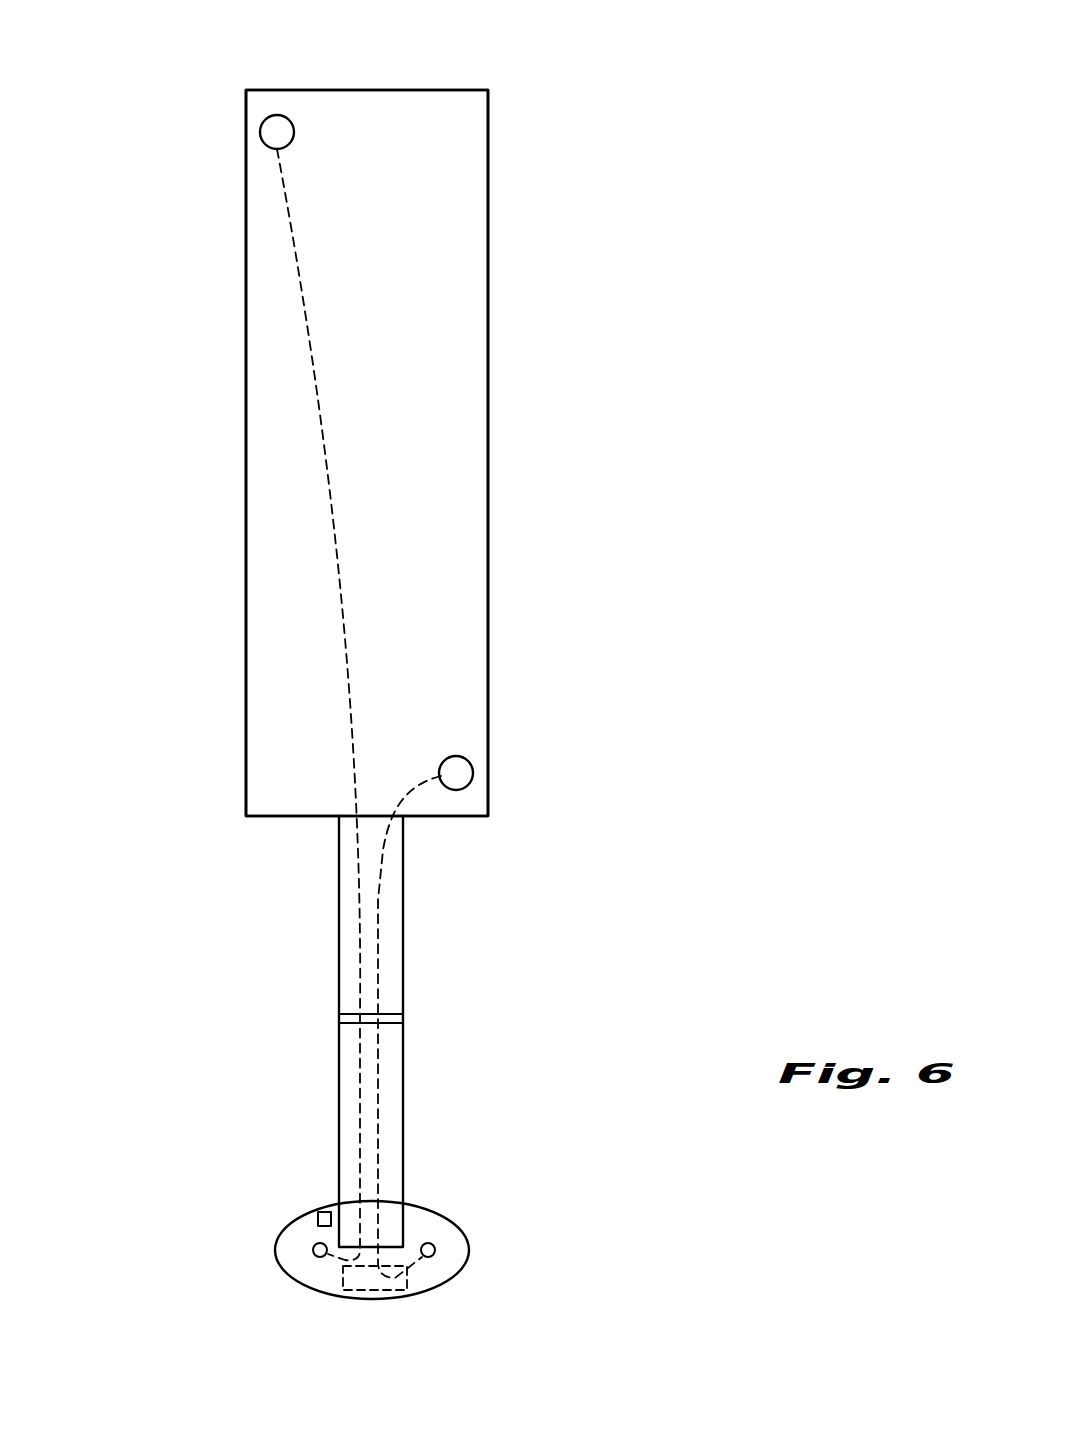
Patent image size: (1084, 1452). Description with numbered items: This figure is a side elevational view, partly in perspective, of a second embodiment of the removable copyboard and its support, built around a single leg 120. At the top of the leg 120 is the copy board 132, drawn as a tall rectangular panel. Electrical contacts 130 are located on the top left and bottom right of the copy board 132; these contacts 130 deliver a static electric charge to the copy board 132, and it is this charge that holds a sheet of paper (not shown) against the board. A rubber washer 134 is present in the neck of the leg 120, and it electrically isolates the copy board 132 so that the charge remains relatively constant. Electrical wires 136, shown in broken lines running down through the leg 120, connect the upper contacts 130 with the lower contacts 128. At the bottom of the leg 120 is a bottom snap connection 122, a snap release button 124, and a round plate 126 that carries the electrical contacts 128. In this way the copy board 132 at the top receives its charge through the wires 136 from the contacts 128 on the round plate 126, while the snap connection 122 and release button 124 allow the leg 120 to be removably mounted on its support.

The leg 120 is at (608, 433).
The bottom snap connection 122 is at (368, 1290).
The snap release button 124 is at (324, 1211).
The round plate 126 is at (308, 1208).
The electrical contacts 128 is at (313, 1250).
The electrical contacts 130 is at (277, 115).
The copy board 132 is at (378, 90).
The rubber washer 134 is at (402, 1014).
The electrical wires 136 is at (360, 922).